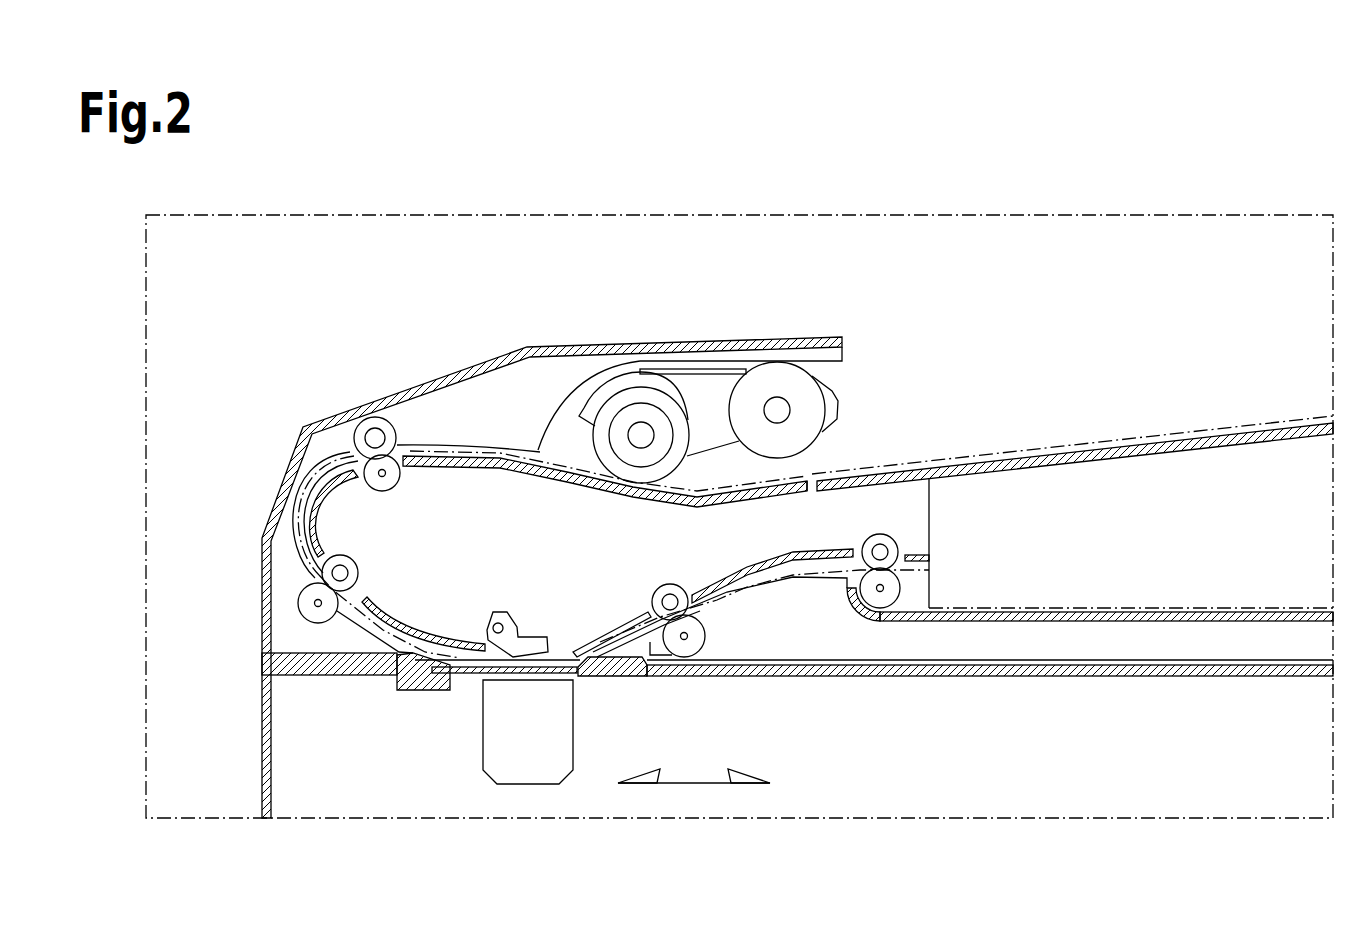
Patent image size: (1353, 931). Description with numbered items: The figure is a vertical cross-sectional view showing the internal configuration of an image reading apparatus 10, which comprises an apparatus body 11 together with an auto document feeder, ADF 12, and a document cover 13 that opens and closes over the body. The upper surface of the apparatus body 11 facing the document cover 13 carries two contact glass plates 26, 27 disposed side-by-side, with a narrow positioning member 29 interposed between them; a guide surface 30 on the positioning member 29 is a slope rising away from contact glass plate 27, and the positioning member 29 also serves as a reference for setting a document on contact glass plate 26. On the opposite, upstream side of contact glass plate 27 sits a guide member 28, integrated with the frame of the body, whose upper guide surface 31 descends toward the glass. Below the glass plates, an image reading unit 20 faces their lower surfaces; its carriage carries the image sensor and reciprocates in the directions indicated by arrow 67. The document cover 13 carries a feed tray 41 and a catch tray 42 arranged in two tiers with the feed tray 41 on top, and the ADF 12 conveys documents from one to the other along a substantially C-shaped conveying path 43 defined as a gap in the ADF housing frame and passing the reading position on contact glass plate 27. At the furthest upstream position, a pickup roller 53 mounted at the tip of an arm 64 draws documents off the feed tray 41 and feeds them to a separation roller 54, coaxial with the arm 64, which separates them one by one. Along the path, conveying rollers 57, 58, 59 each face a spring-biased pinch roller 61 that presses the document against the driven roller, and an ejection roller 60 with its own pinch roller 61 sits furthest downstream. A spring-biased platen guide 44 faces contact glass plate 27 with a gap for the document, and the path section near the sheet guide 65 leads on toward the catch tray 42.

The image reading apparatus 10 is at (274, 291).
The apparatus body 11 is at (262, 722).
The auto document feeder (ADF) 12 is at (682, 287).
The document cover 13 is at (966, 460).
The image reading unit 20 is at (489, 786).
The contact glass plate 26 is at (946, 677).
The contact glass plate 27 is at (475, 688).
The guide member 28 is at (406, 652).
The positioning member 29 is at (593, 673).
The guide surface 30 is at (600, 650).
The guide surface 31 is at (426, 650).
The feed tray 41 is at (1184, 438).
The catch tray 42 is at (1190, 608).
The conveying path 43 is at (430, 447).
The platen guide 44 is at (512, 614).
The pickup roller 53 is at (774, 363).
The separation roller 54 is at (641, 388).
The conveying roller 57 is at (358, 428).
The conveying roller 58 is at (353, 562).
The conveying roller 59 is at (656, 590).
The ejection roller 60 is at (877, 535).
The pinch roller 61 is at (392, 489).
The arm 64 is at (707, 370).
The guide end 65 is at (803, 486).
The arrow 67 is at (694, 785).